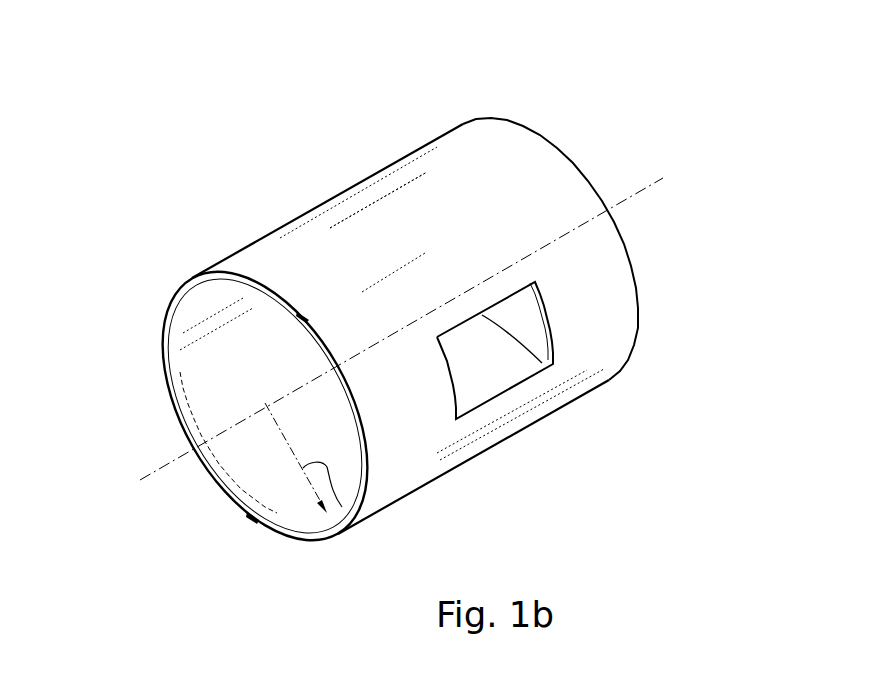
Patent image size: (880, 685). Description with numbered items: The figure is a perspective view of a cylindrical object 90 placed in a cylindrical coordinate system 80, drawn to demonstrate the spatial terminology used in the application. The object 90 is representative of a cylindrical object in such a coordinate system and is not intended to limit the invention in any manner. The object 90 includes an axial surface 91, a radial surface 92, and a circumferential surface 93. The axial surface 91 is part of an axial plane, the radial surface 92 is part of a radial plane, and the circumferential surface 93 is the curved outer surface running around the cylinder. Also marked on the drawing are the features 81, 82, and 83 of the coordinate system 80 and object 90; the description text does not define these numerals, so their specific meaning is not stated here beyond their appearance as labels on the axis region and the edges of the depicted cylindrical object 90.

The cylindrical coordinate system 80 is at (568, 126).
The longitudinal axis 81 is at (150, 474).
The lower edge 82 is at (362, 519).
The front rim 83 is at (172, 302).
The object 90 is at (429, 113).
The axial surface 91 is at (524, 370).
The radial surface 92 is at (281, 527).
The circumferential surface 93 is at (376, 221).